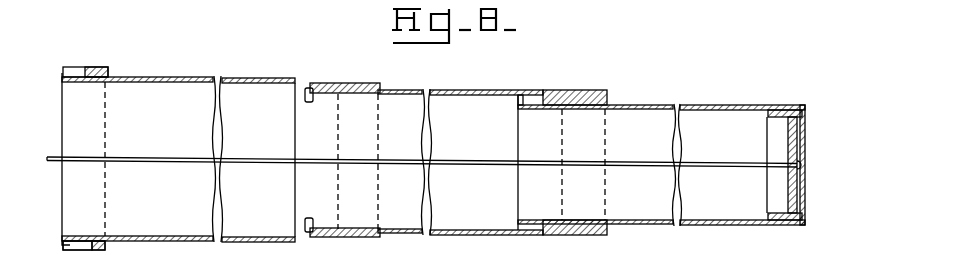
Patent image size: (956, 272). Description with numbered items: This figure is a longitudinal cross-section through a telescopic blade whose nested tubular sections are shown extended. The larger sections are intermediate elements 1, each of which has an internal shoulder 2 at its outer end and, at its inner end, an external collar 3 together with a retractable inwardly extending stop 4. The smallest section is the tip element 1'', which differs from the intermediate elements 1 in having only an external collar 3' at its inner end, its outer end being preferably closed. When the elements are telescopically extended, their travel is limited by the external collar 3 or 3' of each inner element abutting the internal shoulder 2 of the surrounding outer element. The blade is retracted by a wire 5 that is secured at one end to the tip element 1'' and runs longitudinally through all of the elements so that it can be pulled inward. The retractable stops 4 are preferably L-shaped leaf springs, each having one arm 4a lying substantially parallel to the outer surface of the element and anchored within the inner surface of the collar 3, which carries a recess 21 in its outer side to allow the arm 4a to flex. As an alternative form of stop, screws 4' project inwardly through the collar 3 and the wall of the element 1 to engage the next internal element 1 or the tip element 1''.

The intermediate element 1 is at (302, 144).
The tip element 1'' is at (661, 150).
The internal shoulder 2 is at (356, 80).
The recess 21 is at (83, 67).
The external collar 3 is at (187, 151).
The external collar 3' is at (498, 113).
The retractable stop 4 is at (54, 159).
The arm 4a is at (70, 250).
The screw 4' is at (283, 160).
The wire 5 is at (164, 157).